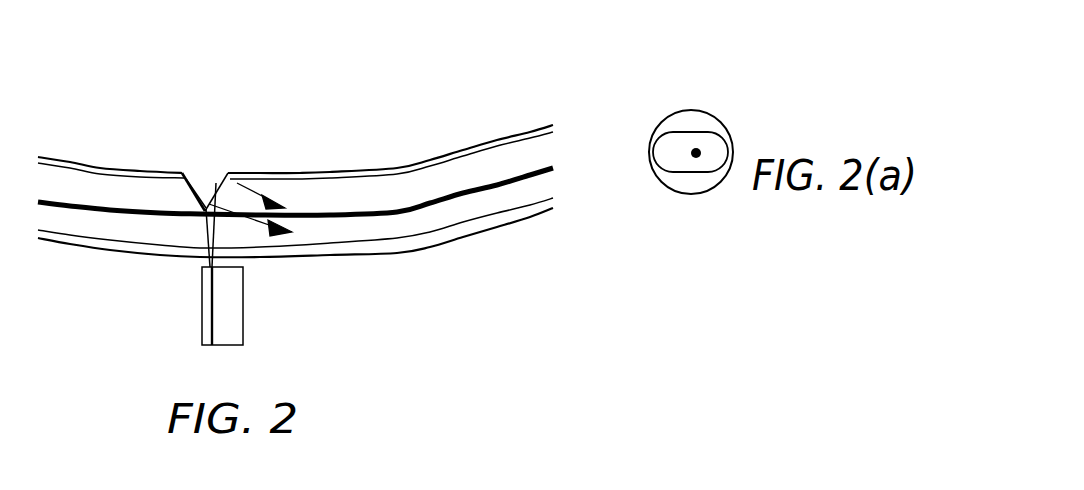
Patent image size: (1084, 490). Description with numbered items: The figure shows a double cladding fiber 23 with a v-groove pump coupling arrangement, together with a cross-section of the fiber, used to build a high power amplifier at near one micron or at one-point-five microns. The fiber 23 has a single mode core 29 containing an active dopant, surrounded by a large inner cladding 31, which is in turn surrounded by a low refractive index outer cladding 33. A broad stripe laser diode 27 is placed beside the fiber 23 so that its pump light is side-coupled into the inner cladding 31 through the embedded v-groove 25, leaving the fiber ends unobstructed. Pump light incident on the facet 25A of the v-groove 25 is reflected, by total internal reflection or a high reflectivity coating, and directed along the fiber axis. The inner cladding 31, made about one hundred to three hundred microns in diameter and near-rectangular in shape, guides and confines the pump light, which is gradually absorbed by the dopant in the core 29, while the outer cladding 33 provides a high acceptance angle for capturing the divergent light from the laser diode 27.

In FIG. 2, the double cladding fiber 23 is at (295, 160).
In FIG. 2, the v-groove 25 is at (199, 183).
In FIG. 2, the facet 25A is at (199, 184).
In FIG. 2, the broad stripe laser diode 27 is at (247, 328).
In FIG. 2, the single mode core 29 is at (696, 153).
The single mode core 29 is at (640, 225).
The inner cladding 31 is at (709, 157).
The outer cladding 33 is at (679, 116).